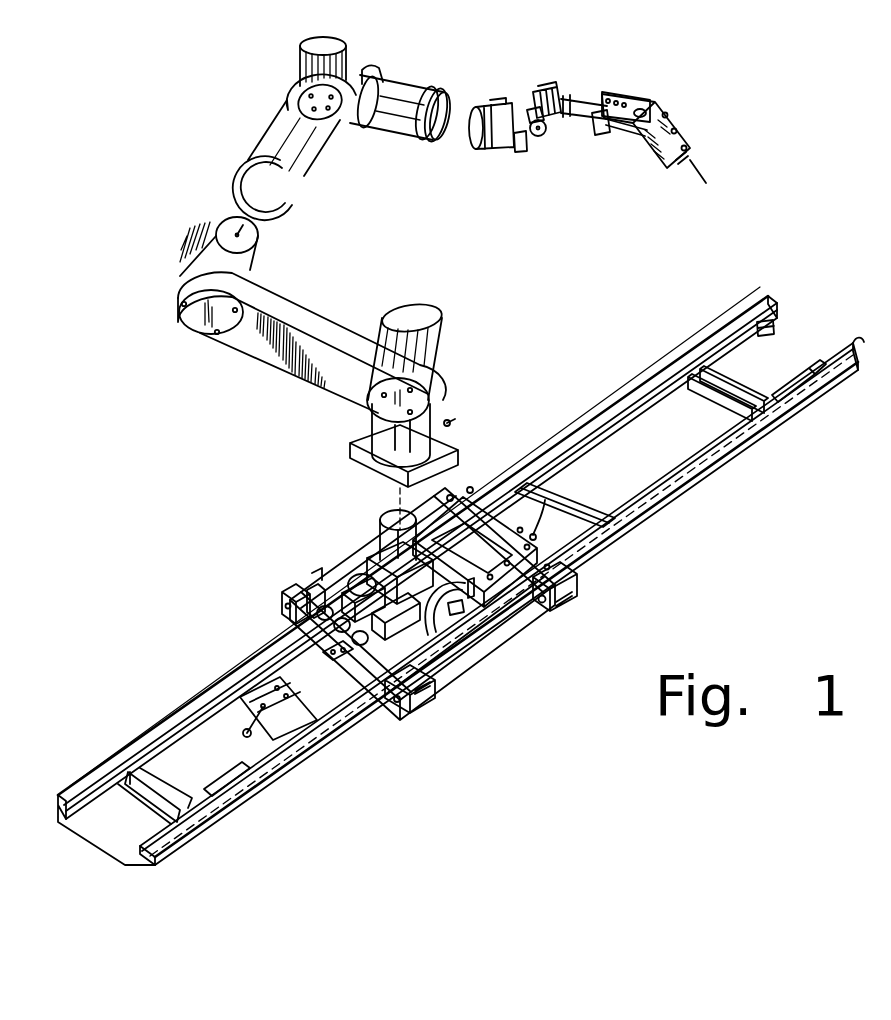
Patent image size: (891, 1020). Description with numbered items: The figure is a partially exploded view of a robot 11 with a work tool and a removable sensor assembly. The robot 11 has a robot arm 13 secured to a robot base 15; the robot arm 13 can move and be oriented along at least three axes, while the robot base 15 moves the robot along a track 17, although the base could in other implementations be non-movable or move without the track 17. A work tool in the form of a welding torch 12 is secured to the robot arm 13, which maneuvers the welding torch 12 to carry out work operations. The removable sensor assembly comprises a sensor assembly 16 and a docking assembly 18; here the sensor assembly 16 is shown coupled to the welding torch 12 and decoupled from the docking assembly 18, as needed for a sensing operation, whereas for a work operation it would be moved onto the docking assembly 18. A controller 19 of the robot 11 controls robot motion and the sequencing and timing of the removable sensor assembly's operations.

The robot 11 is at (200, 406).
The welding torch 12 is at (627, 130).
The robot arm 13 is at (306, 158).
The robot base 15 is at (293, 594).
The sensor assembly 16 is at (678, 120).
The track 17 is at (700, 482).
The docking assembly 18 is at (483, 640).
The controller 19 is at (360, 572).